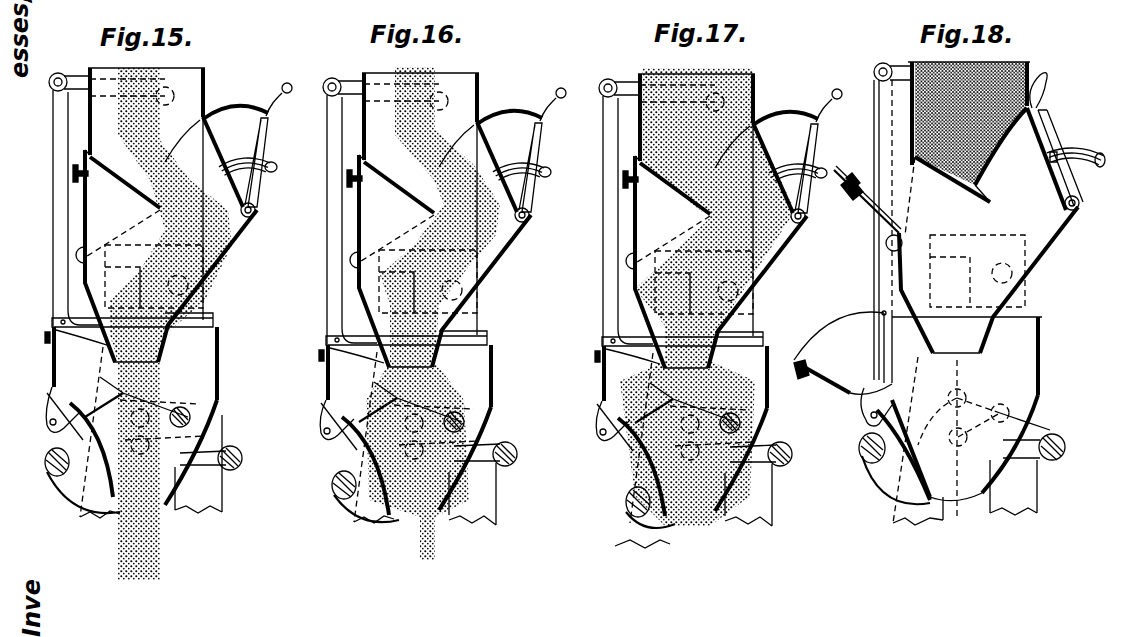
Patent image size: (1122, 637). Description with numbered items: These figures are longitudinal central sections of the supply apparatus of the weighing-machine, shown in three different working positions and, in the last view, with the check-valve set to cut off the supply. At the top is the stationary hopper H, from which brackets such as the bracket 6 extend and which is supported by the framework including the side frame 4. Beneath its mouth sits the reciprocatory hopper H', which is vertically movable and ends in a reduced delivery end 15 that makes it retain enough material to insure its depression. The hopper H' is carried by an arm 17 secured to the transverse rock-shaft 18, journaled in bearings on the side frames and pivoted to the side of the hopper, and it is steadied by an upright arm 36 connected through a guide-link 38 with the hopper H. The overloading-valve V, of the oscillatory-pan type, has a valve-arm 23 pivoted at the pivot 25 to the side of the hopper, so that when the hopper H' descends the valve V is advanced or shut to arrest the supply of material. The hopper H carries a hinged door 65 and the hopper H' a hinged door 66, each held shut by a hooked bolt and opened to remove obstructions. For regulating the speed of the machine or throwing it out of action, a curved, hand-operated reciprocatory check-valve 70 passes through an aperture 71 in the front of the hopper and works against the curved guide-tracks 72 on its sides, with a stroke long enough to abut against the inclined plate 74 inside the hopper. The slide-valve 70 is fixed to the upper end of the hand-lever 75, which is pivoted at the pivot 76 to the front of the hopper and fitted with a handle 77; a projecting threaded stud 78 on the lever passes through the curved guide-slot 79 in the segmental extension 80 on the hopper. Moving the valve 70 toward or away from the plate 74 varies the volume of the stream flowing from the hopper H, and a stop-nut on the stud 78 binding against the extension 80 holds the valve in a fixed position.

In FIG. 15, the side frame 4 is at (210, 497).
In FIG. 16, the side frame 4 is at (482, 494).
In FIG. 17, the side frame 4 is at (758, 495).
In FIG. 18, the side frame 4 is at (1017, 498).
In FIG. 15, the bracket 6 is at (204, 284).
In FIG. 16, the bracket 6 is at (455, 291).
In FIG. 17, the bracket 6 is at (731, 292).
In FIG. 18, the bracket 6 is at (1018, 290).
In FIG. 15, the reduced delivery end 15 is at (176, 478).
In FIG. 16, the reduced delivery end 15 is at (465, 493).
In FIG. 17, the reduced delivery end 15 is at (741, 494).
In FIG. 18, the reduced delivery end 15 is at (991, 478).
In FIG. 15, the arm 17 is at (212, 445).
In FIG. 16, the arm 17 is at (485, 435).
In FIG. 17, the arm 17 is at (761, 436).
In FIG. 18, the arm 17 is at (1035, 440).
In FIG. 15, the transverse rock-shaft 18 is at (240, 449).
In FIG. 16, the transverse rock-shaft 18 is at (516, 446).
In FIG. 17, the transverse rock-shaft 18 is at (791, 446).
In FIG. 18, the transverse rock-shaft 18 is at (1060, 444).
In FIG. 15, the valve-arm 23 is at (78, 440).
In FIG. 16, the valve-arm 23 is at (355, 459).
In FIG. 17, the valve-arm 23 is at (631, 460).
In FIG. 18, the valve-arm 23 is at (878, 428).
In FIG. 15, the pivot 25 is at (118, 390).
In FIG. 16, the pivot 25 is at (416, 437).
In FIG. 17, the pivot 25 is at (688, 438).
In FIG. 18, the pivot 25 is at (954, 390).
In FIG. 15, the upright arm 36 is at (53, 125).
In FIG. 16, the upright arm 36 is at (336, 219).
In FIG. 17, the upright arm 36 is at (612, 220).
In FIG. 18, the upright arm 36 is at (878, 102).
In FIG. 15, the guide-link 38 is at (77, 75).
In FIG. 16, the guide-link 38 is at (343, 75).
In FIG. 17, the guide-link 38 is at (619, 76).
In FIG. 18, the guide-link 38 is at (903, 66).
In FIG. 15, the door 65 is at (84, 205).
In FIG. 16, the door 65 is at (344, 261).
In FIG. 17, the door 65 is at (620, 262).
In FIG. 18, the door 65 is at (868, 210).
In FIG. 15, the door 66 is at (53, 359).
In FIG. 16, the door 66 is at (392, 385).
In FIG. 17, the door 66 is at (666, 386).
In FIG. 18, the door 66 is at (838, 393).
In FIG. 15, the reciprocatory check-valve 70 is at (246, 104).
In FIG. 16, the reciprocatory check-valve 70 is at (509, 109).
In FIG. 17, the reciprocatory check-valve 70 is at (785, 110).
In FIG. 18, the reciprocatory check-valve 70 is at (990, 170).
In FIG. 15, the aperture 71 is at (212, 117).
In FIG. 16, the aperture 71 is at (497, 154).
In FIG. 17, the aperture 71 is at (773, 155).
In FIG. 18, the aperture 71 is at (1042, 112).
In FIG. 15, the curved guide-track 72 is at (183, 142).
In FIG. 16, the curved guide-track 72 is at (456, 141).
In FIG. 17, the curved guide-track 72 is at (732, 142).
In FIG. 18, the curved guide-track 72 is at (1008, 138).
In FIG. 15, the inclined plate 74 is at (132, 186).
In FIG. 16, the inclined plate 74 is at (396, 212).
In FIG. 17, the inclined plate 74 is at (672, 213).
In FIG. 18, the inclined plate 74 is at (956, 184).
In FIG. 15, the hand-lever 75 is at (271, 129).
In FIG. 16, the hand-lever 75 is at (541, 167).
In FIG. 17, the hand-lever 75 is at (817, 168).
In FIG. 18, the hand-lever 75 is at (1054, 128).
In FIG. 15, the pivot 76 is at (256, 210).
In FIG. 16, the pivot 76 is at (537, 213).
In FIG. 17, the pivot 76 is at (813, 214).
In FIG. 18, the pivot 76 is at (1076, 211).
In FIG. 15, the handle 77 is at (283, 88).
In FIG. 16, the handle 77 is at (551, 98).
In FIG. 17, the handle 77 is at (827, 99).
In FIG. 18, the handle 77 is at (1050, 84).
In FIG. 15, the threaded stud 78 is at (262, 163).
In FIG. 16, the threaded stud 78 is at (530, 162).
In FIG. 17, the threaded stud 78 is at (806, 163).
In FIG. 18, the threaded stud 78 is at (1055, 151).
In FIG. 15, the curved guide-slot 79 is at (277, 167).
In FIG. 16, the curved guide-slot 79 is at (558, 167).
In FIG. 17, the curved guide-slot 79 is at (834, 168).
In FIG. 18, the curved guide-slot 79 is at (1100, 153).
In FIG. 15, the segmental extension 80 is at (265, 173).
In FIG. 16, the segmental extension 80 is at (531, 179).
In FIG. 17, the segmental extension 80 is at (807, 180).
In FIG. 18, the segmental extension 80 is at (1084, 168).
In FIG. 15, the stationary hopper H is at (146, 194).
In FIG. 16, the stationary hopper H is at (420, 204).
In FIG. 17, the stationary hopper H is at (696, 205).
In FIG. 18, the stationary hopper H is at (980, 106).
In FIG. 15, the reciprocatory hopper H' is at (205, 416).
In FIG. 16, the reciprocatory hopper H' is at (479, 427).
In FIG. 17, the reciprocatory hopper H' is at (756, 428).
In FIG. 18, the reciprocatory hopper H' is at (979, 409).
In FIG. 15, the overloading-valve V is at (46, 476).
In FIG. 16, the overloading-valve V is at (362, 497).
In FIG. 17, the overloading-valve V is at (633, 507).
In FIG. 18, the overloading-valve V is at (872, 470).